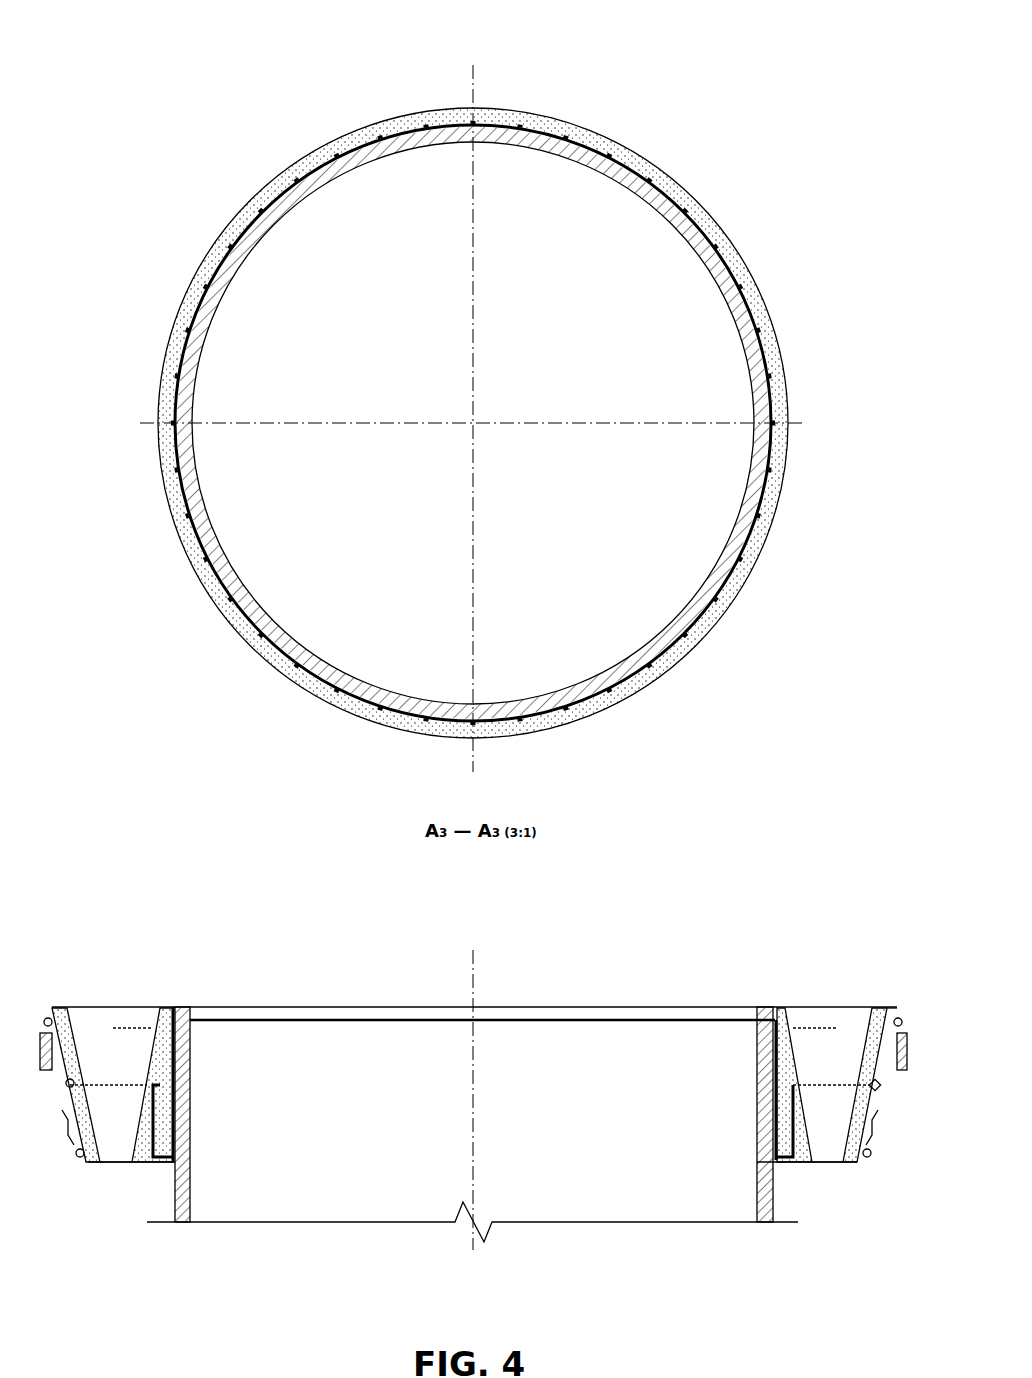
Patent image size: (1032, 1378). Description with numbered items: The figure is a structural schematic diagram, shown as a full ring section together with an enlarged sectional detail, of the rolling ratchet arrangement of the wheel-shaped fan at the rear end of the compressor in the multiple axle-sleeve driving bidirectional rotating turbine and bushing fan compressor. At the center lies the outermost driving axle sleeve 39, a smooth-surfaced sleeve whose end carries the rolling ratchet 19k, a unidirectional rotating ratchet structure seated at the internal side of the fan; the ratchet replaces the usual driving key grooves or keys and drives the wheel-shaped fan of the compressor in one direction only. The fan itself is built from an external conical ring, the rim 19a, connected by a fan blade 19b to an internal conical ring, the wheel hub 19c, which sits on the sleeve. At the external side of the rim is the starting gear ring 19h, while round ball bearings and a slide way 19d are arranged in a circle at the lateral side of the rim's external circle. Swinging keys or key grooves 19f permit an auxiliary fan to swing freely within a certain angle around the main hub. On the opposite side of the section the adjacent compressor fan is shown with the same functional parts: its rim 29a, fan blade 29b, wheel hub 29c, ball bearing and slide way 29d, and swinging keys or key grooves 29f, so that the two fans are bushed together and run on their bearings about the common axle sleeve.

The outermost driving axle sleeve 39 is at (310, 187).
The rolling ratchet 19k is at (628, 150).
The wheel hub 19c is at (673, 187).
The starting gear ring 19h is at (48, 989).
The rim 19a is at (77, 1035).
The fan blade 19b is at (138, 1020).
The swinging keys or key grooves 19f is at (137, 1130).
The ball bearing and slide way 19d is at (900, 1012).
The wheel hub 29c is at (717, 1034).
The fan blade 29b is at (787, 1035).
The rim 29a is at (827, 1035).
The ball bearing and slide way 29d is at (852, 1028).
The swinging keys or key grooves 29f is at (800, 1105).